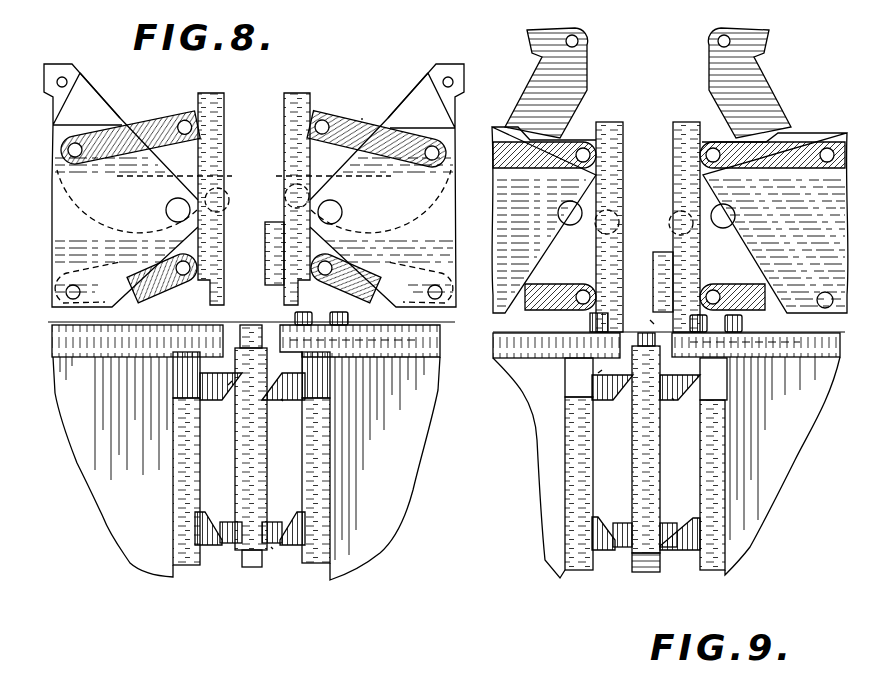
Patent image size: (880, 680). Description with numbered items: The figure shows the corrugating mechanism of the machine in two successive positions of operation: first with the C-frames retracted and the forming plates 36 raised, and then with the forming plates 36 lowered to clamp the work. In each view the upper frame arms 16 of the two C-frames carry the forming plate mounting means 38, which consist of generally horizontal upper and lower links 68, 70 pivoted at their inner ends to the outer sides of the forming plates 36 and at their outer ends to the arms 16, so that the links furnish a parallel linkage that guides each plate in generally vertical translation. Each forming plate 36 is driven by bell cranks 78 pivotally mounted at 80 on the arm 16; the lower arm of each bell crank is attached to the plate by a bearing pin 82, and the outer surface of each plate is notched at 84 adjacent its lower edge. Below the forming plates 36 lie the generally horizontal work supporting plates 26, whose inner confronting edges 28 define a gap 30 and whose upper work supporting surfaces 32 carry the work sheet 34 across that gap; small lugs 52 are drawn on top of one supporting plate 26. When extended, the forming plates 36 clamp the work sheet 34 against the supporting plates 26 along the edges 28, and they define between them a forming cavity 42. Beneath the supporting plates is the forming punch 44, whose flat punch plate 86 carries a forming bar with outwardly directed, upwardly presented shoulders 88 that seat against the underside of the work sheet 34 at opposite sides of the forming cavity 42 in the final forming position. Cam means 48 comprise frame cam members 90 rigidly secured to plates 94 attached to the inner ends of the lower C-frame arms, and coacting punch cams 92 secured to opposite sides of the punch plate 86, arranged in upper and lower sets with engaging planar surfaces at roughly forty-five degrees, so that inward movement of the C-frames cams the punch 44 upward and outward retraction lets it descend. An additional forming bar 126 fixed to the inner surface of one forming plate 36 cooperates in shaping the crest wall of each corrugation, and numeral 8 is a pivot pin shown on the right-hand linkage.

In FIG. 8, the pivot pin 8 is at (341, 211).
In FIG. 8, the upper frame arm 16 is at (254, 190).
In FIG. 9, the upper frame arm 16 is at (670, 220).
In FIG. 8, the work supporting plate 26 is at (453, 347).
In FIG. 9, the work supporting plate 26 is at (520, 345).
In FIG. 8, the inner confronting edge 28 is at (227, 358).
In FIG. 9, the inner confronting edge 28 is at (672, 353).
In FIG. 8, the gap 30 is at (230, 383).
In FIG. 9, the gap 30 is at (636, 348).
In FIG. 8, the upper work supporting surface 32 is at (93, 357).
In FIG. 8, the work sheet 34 is at (162, 327).
In FIG. 8, the forming plate 36 is at (212, 90).
In FIG. 9, the forming plate 36 is at (604, 120).
In FIG. 8, the mounting means 38 is at (362, 118).
In FIG. 9, the forming cavity 42 is at (650, 330).
In FIG. 9, the forming punch 44 is at (660, 458).
In FIG. 8, the cam means 48 is at (283, 400).
In FIG. 9, the cam means 48 is at (673, 400).
In FIG. 8, the lug 52 is at (348, 321).
In FIG. 9, the lug 52 is at (716, 323).
In FIG. 8, the upper link 68 is at (140, 130).
In FIG. 9, the upper link 68 is at (782, 155).
In FIG. 8, the lower link 70 is at (167, 277).
In FIG. 9, the lower link 70 is at (552, 290).
In FIG. 8, the bell crank 78 is at (82, 90).
In FIG. 9, the bell crank 78 is at (568, 70).
In FIG. 8, the pivot 80 is at (172, 209).
In FIG. 9, the pivot 80 is at (568, 212).
In FIG. 8, the bearing pin 82 is at (218, 193).
In FIG. 9, the bearing pin 82 is at (675, 215).
In FIG. 9, the notch 84 is at (598, 316).
In FIG. 8, the punch plate 86 is at (245, 488).
In FIG. 9, the punch plate 86 is at (640, 562).
In FIG. 8, the shoulder 88 is at (248, 340).
In FIG. 9, the shoulder 88 is at (632, 352).
In FIG. 8, the cam member 90 is at (293, 382).
In FIG. 9, the cam member 90 is at (690, 380).
In FIG. 8, the punch cam 92 is at (232, 386).
In FIG. 9, the punch cam 92 is at (630, 386).
In FIG. 8, the plate 94 is at (312, 490).
In FIG. 9, the plate 94 is at (573, 471).
In FIG. 8, the additional forming bar 126 is at (266, 232).
In FIG. 9, the additional forming bar 126 is at (662, 268).